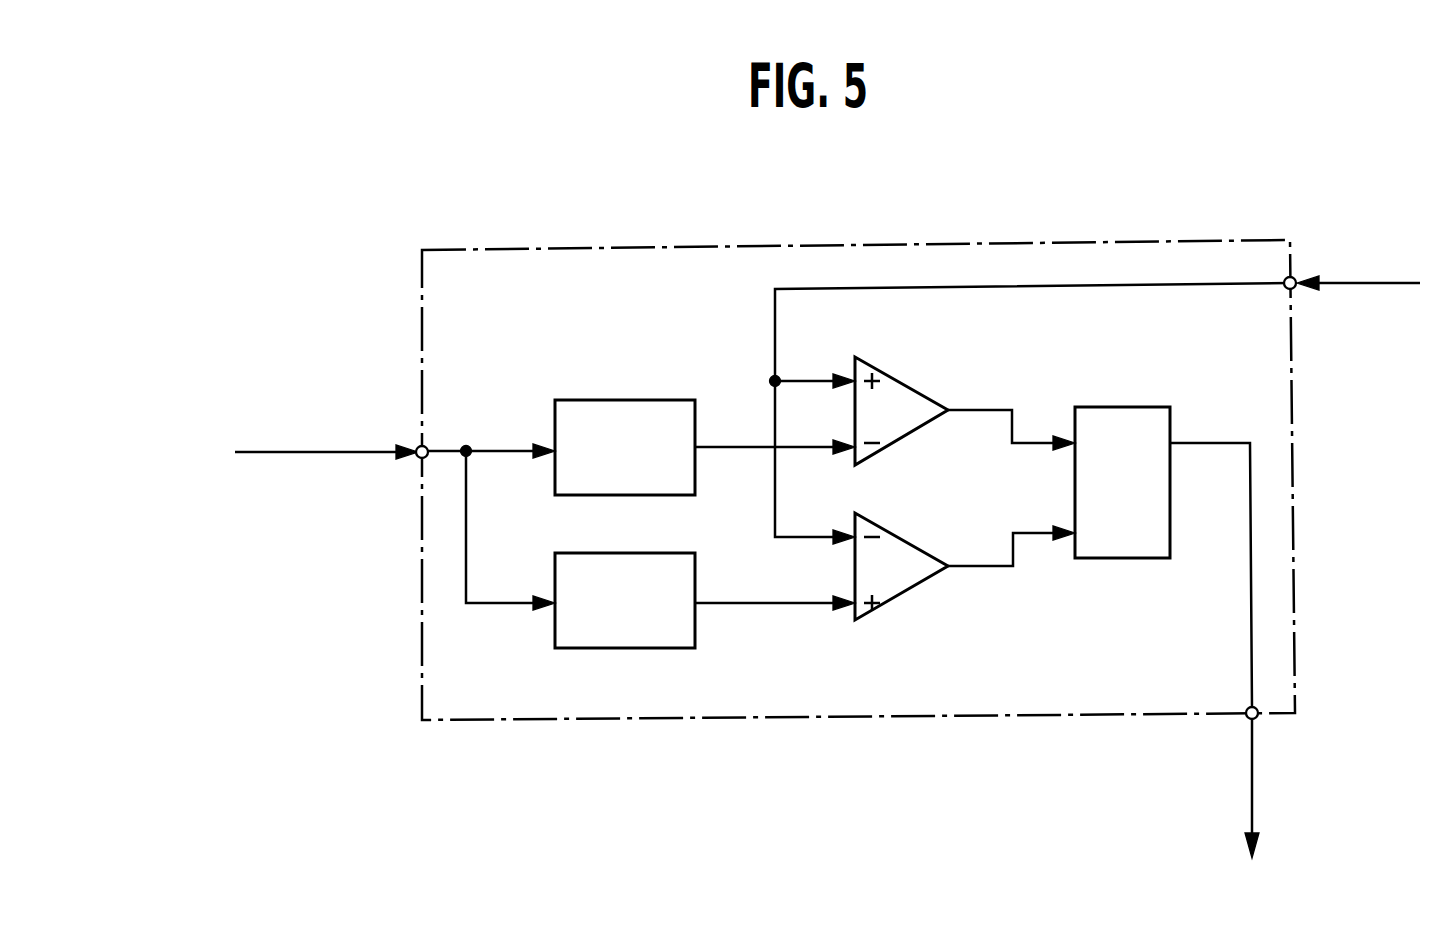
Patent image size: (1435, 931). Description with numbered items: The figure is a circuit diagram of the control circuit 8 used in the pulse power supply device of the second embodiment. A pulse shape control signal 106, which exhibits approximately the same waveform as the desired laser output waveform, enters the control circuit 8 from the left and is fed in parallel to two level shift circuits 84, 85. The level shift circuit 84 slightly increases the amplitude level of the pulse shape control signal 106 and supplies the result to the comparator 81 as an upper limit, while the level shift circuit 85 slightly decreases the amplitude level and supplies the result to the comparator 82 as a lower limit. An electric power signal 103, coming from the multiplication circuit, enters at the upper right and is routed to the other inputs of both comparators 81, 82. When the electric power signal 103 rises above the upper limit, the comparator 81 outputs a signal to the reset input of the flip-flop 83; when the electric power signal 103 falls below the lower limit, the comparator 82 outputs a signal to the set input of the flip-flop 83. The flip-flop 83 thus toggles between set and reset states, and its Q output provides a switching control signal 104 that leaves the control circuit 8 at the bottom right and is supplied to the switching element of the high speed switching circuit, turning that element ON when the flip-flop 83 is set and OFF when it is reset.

The control circuit 8 is at (1163, 240).
The comparator 81 is at (893, 377).
The comparator 82 is at (908, 595).
The flip-flop 83 is at (1133, 407).
The level shift circuit 84 is at (556, 400).
The level shift circuit 85 is at (557, 650).
The electric power signal 103 is at (1378, 280).
The switching control signal 104 is at (1253, 770).
The pulse shape control signal 106 is at (235, 452).